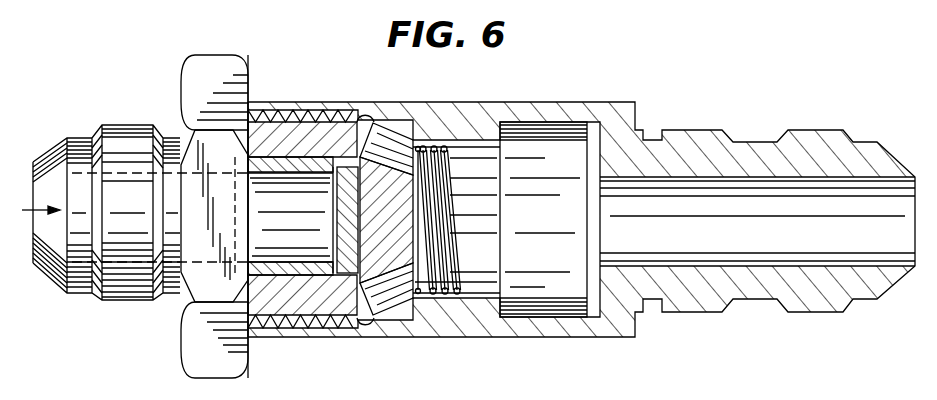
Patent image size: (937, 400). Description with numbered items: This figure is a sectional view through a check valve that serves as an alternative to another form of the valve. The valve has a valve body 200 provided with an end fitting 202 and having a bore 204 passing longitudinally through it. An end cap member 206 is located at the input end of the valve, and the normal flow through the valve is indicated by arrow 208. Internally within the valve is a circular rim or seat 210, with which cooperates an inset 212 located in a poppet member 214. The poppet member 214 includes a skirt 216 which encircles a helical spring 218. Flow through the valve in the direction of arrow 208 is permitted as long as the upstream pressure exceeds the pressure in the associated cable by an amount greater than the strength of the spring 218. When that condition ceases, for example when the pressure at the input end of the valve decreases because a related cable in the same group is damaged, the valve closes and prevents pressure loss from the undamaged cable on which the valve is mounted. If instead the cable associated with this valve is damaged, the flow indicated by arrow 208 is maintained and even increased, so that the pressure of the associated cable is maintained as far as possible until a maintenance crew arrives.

The valve body 200 is at (523, 102).
The end fitting 202 is at (705, 128).
The bore 204 is at (672, 242).
The end cap member 206 is at (207, 63).
The arrow 208 is at (38, 203).
The circular rim or seat 210 is at (336, 150).
The inset 212 is at (400, 138).
The poppet member 214 is at (390, 240).
The skirt 216 is at (478, 132).
The helical spring 218 is at (552, 148).